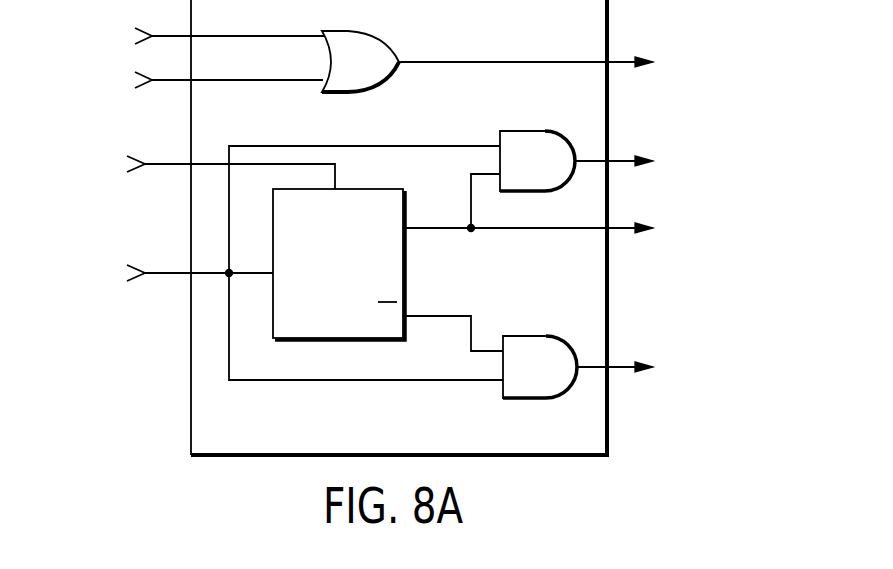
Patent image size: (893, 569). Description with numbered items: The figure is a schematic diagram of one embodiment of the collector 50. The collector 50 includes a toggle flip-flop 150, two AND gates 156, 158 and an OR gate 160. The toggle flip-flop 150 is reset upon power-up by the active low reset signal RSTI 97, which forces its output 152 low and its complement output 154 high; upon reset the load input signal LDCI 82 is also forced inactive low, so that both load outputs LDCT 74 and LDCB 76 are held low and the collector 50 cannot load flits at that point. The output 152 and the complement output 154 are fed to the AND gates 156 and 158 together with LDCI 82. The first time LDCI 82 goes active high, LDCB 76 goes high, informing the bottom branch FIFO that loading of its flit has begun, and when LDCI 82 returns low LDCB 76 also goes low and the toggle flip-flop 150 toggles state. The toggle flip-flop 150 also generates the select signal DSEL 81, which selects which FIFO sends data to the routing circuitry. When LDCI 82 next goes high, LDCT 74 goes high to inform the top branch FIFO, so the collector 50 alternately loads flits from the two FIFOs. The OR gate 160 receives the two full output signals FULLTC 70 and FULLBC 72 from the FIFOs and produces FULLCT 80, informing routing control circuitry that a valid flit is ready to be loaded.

The collector 50 is at (409, 447).
The FULLTC signal 70 is at (185, 41).
The FULLBC signal 72 is at (183, 100).
The reset signal RSTI 97 is at (200, 177).
The load input signal LDCI 82 is at (285, 263).
The OR gate 160 is at (377, 75).
The FULLCT signal 80 is at (571, 75).
The toggle flip-flop 150 is at (358, 301).
The output 152 is at (451, 203).
The complement output 154 is at (453, 322).
The AND gate 156 is at (548, 175).
The LDCT signal 74 is at (651, 172).
The select signal DSEL 81 is at (601, 246).
The AND gate 158 is at (550, 380).
The LDCB signal 76 is at (654, 373).